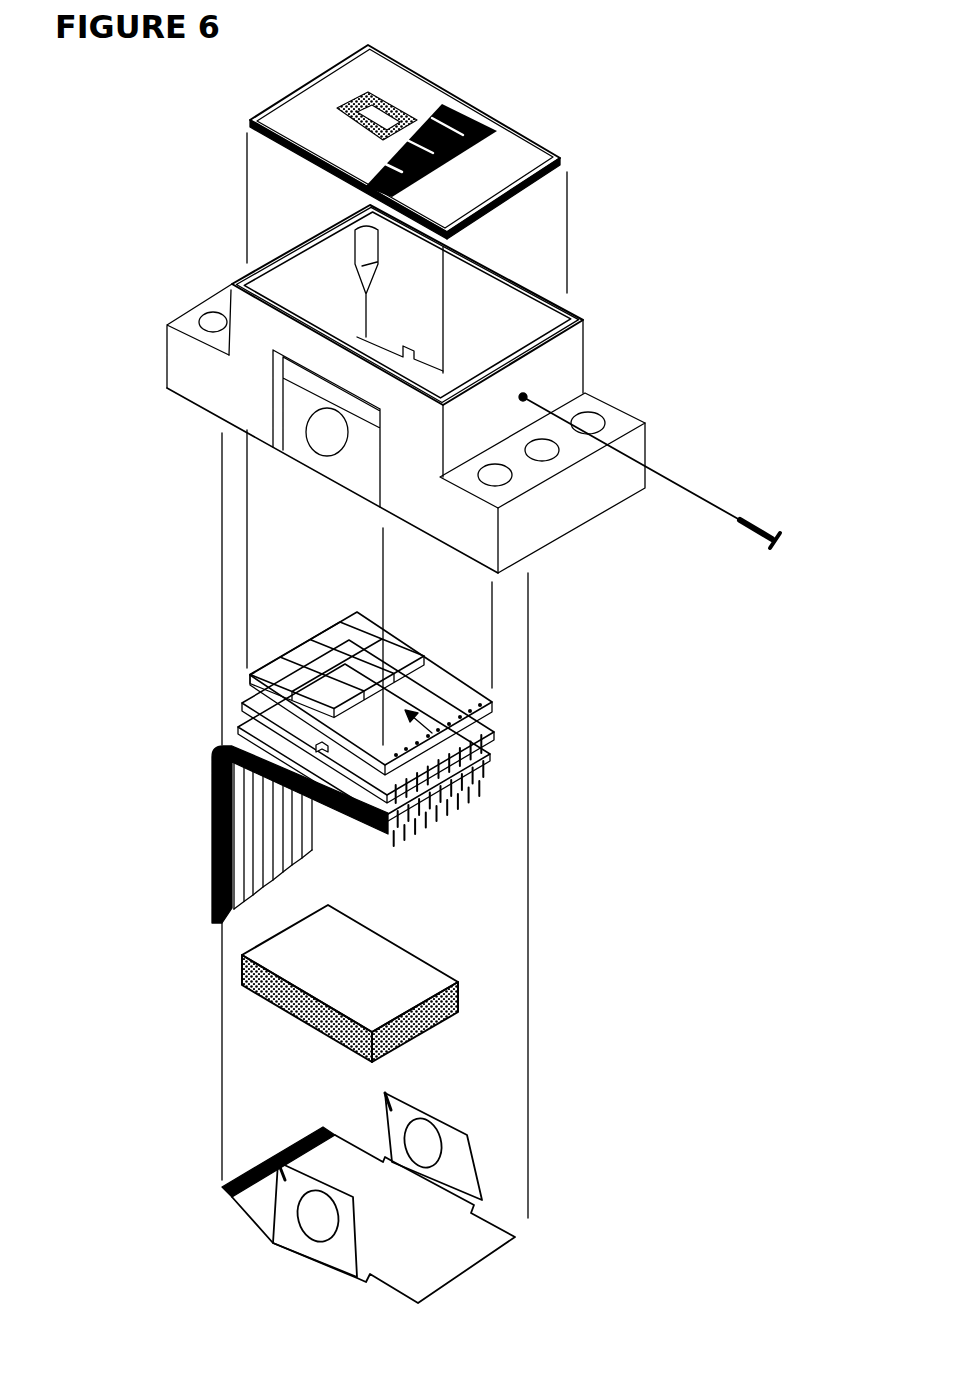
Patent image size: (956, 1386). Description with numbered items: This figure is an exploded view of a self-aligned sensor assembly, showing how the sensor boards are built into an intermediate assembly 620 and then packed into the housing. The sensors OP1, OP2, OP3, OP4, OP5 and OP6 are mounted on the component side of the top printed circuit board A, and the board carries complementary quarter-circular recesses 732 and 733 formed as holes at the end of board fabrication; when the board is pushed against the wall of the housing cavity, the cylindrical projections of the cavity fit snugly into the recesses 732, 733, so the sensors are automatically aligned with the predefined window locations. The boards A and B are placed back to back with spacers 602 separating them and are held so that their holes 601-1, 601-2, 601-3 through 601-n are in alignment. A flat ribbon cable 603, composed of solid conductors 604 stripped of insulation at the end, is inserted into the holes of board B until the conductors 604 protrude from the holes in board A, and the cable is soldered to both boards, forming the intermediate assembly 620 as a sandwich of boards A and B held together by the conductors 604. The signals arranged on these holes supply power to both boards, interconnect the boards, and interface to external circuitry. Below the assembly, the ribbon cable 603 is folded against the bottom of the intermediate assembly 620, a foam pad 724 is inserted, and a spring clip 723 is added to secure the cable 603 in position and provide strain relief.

The quarter-circular recess 732 is at (357, 621).
The quarter-circular recess 733 is at (250, 677).
The sensor OP1 is at (400, 648).
The sensor OP2 is at (290, 662).
The sensor OP3 is at (368, 662).
The sensor OP4 is at (428, 662).
The sensor OP5 is at (322, 626).
The sensor OP6 is at (303, 633).
The printed circuit board A is at (495, 695).
The printed circuit board B is at (490, 758).
The spacer 602 is at (242, 708).
The solid conductor 604 is at (494, 718).
The hole 601-n is at (470, 745).
The hole 601-1 is at (367, 832).
The hole 601-2 is at (417, 810).
The hole 601-3 is at (457, 788).
The flat ribbon cable 603 is at (213, 897).
The intermediate assembly 620 is at (65, 630).
The foam pad 724 is at (447, 972).
The spring clip 723 is at (515, 1237).